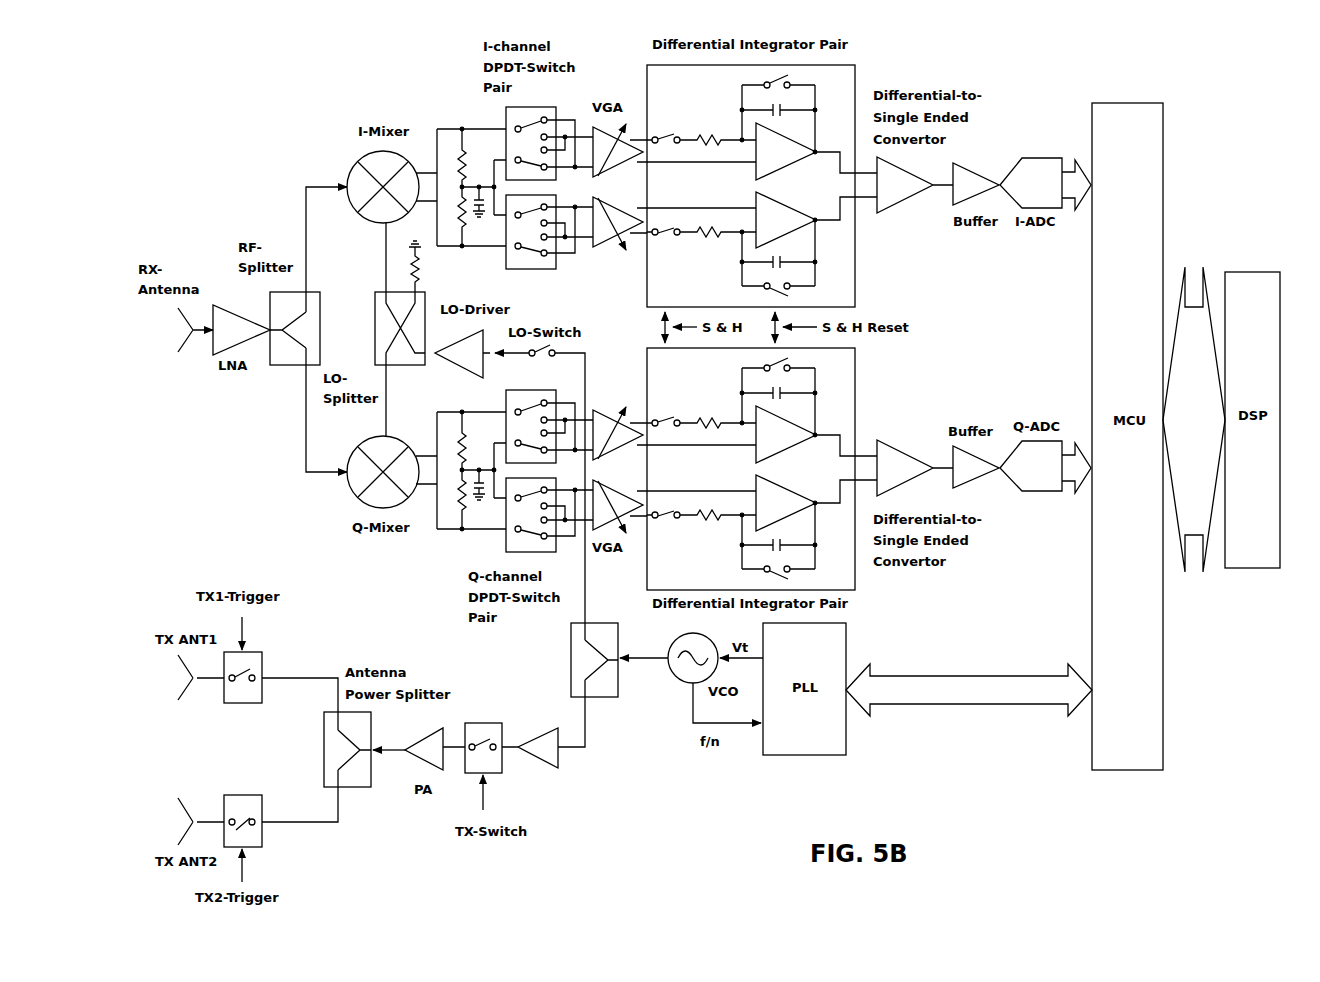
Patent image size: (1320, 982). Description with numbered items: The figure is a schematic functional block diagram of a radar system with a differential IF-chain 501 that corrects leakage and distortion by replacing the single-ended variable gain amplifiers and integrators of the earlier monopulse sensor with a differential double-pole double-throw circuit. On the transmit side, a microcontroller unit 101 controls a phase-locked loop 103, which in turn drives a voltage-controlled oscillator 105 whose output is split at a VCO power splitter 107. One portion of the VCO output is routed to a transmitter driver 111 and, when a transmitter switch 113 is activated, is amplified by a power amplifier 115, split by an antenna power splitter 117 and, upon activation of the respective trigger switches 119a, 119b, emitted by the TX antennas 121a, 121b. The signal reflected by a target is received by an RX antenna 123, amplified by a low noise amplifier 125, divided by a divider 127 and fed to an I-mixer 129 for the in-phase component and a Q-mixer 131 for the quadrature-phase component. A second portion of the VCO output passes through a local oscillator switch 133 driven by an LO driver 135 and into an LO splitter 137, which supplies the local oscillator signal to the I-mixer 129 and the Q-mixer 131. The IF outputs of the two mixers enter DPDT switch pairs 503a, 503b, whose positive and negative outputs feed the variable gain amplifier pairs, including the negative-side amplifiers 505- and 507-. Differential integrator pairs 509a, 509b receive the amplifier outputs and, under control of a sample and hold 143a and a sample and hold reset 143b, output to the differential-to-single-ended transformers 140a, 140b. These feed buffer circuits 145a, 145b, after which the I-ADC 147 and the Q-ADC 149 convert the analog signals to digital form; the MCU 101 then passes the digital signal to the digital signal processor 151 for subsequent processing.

The radar system with differential IF-chain 501 is at (214, 99).
The microcontroller unit 101 is at (1127, 436).
The phase-locked loop 103 is at (848, 650).
The voltage-controlled oscillator 105 is at (680, 672).
The VCO power splitter 107 is at (568, 658).
The transmitter driver 111 is at (560, 769).
The transmitter switch 113 is at (493, 722).
The power amplifier 115 is at (420, 778).
The antenna power splitter 117 is at (324, 753).
The trigger switch 119a is at (265, 661).
The trigger switch 119b is at (265, 848).
The TX antenna 121a is at (176, 664).
The TX antenna 121b is at (180, 840).
The RX antenna 123 is at (172, 345).
The low noise amplifier 125 is at (233, 310).
The divider 127 is at (270, 368).
The I-mixer 129 is at (351, 160).
The Q-mixer 131 is at (350, 496).
The local oscillator switch 133 is at (556, 357).
The LO driver 135 is at (462, 369).
The LO splitter 137 is at (378, 293).
The differential-to-single-ended transformer 140a is at (908, 200).
The differential-to-single-ended transformer 140b is at (905, 450).
The sample and hold 143a is at (660, 325).
The sample and hold reset 143b is at (792, 323).
The buffer circuit 145a is at (975, 175).
The buffer circuit 145b is at (985, 460).
The I-ADC 147 is at (1038, 165).
The Q-ADC 149 is at (1045, 503).
The digital signal processor 151 is at (1221, 419).
The DPDT switch pair 503a is at (437, 127).
The DPDT switch pair 503b is at (437, 531).
The variable gain amplifier 505- is at (598, 246).
The variable gain amplifier 507- is at (606, 540).
The differential integrator pair 509a is at (647, 65).
The differential integrator pair 509b is at (647, 586).